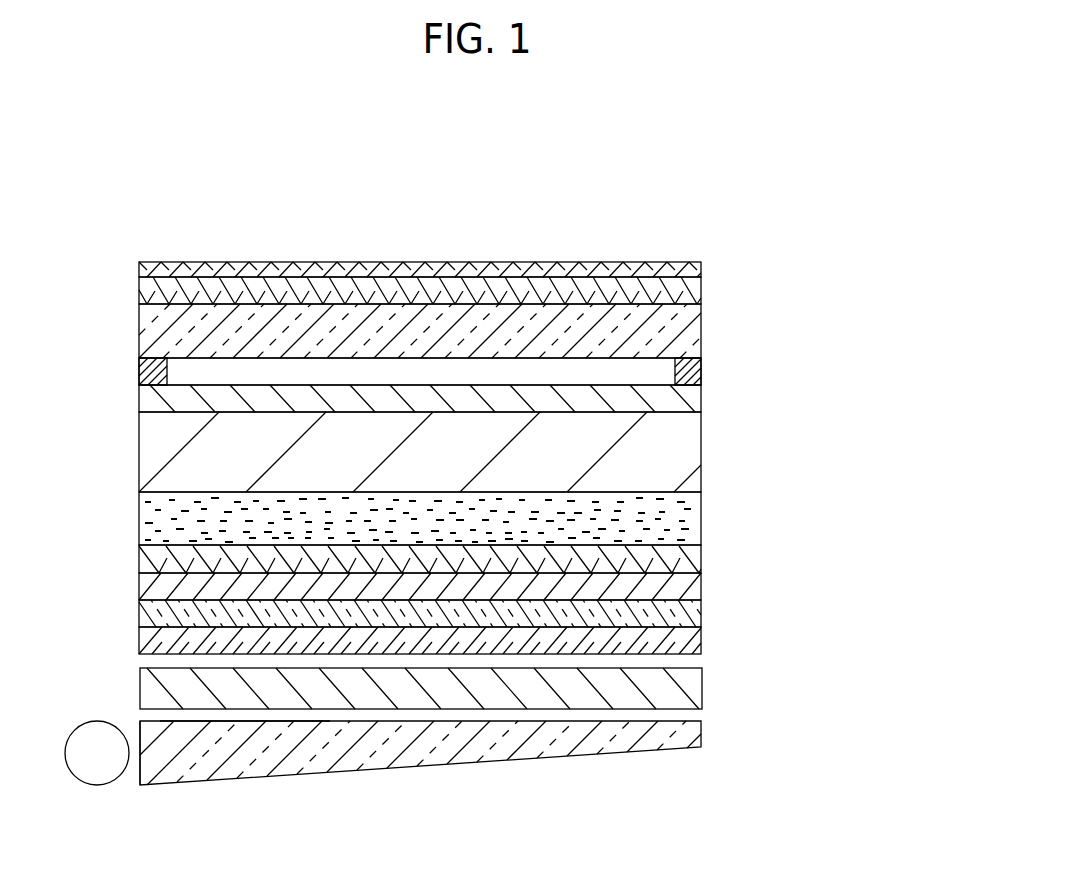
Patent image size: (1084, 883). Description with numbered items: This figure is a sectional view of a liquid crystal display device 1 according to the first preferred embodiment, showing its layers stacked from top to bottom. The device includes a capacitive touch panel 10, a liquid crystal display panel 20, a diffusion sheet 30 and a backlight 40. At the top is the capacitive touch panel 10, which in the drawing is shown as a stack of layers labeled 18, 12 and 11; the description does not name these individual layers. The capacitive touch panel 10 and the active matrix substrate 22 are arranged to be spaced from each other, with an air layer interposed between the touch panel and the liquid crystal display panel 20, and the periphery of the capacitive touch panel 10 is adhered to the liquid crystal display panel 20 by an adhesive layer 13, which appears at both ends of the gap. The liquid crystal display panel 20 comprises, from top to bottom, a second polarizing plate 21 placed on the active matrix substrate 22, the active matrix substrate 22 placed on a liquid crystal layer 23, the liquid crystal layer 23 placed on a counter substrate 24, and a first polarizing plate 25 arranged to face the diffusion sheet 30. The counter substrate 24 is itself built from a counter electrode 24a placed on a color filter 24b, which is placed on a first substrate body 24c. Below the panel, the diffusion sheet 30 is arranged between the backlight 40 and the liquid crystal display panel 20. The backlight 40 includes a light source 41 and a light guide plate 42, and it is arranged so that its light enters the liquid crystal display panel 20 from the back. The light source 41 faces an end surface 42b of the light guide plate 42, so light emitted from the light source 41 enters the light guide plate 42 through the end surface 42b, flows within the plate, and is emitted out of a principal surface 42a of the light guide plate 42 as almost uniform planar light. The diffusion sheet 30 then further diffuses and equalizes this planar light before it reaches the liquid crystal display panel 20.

The liquid crystal display device 1 is at (674, 185).
The capacitive touch panel 10 is at (800, 210).
The touch panel substrate 11 is at (702, 330).
The electrode layer 12 is at (702, 292).
The adhesive layer 13 is at (702, 373).
The cover layer 18 is at (702, 268).
The liquid crystal display panel 20 is at (860, 385).
The second polarizing plate 21 is at (702, 398).
The active matrix substrate 22 is at (702, 447).
The liquid crystal layer 23 is at (702, 522).
The counter substrate 24 is at (800, 528).
The counter electrode 24a is at (702, 560).
The color filter 24b is at (702, 588).
The first substrate body 24c is at (702, 617).
The first polarizing plate 25 is at (702, 645).
The diffusion sheet 30 is at (702, 690).
The backlight 40 is at (387, 770).
The light source 41 is at (103, 722).
The light guide plate 42 is at (702, 735).
The principal surface 42a is at (215, 724).
The end surface 42b is at (128, 780).